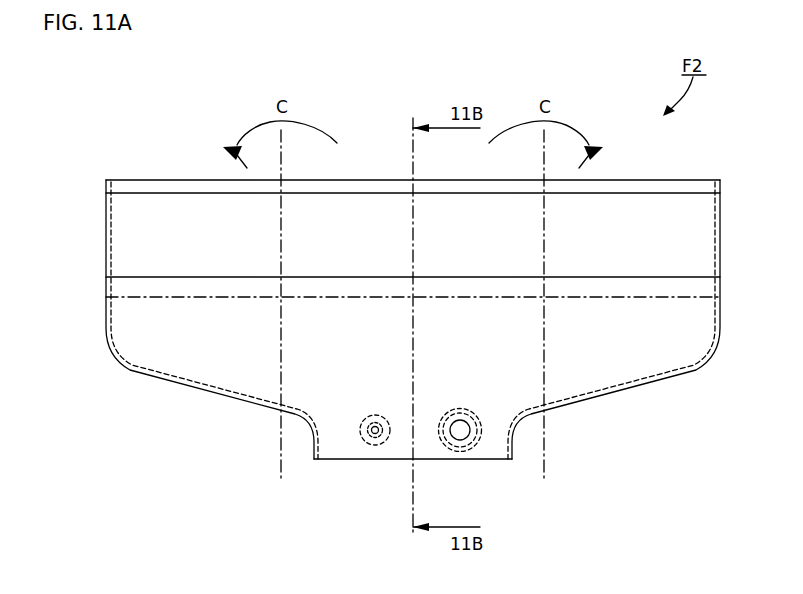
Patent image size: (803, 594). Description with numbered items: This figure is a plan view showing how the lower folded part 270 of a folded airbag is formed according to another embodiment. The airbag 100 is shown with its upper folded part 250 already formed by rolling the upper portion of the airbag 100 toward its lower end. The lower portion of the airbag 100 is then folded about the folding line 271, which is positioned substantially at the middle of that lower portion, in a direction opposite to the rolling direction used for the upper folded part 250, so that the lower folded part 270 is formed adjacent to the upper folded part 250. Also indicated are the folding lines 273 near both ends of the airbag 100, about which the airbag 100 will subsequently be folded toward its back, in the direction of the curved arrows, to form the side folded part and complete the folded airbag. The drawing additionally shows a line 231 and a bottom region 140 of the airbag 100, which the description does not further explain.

The airbag 100 is at (120, 386).
The bottom plate / rear cover 140 is at (345, 462).
The bending line 231 is at (173, 297).
The upper folded part 250 is at (203, 168).
The lower folded part 270 is at (165, 339).
The folding line 271 is at (133, 193).
The folding line 273 is at (281, 360).